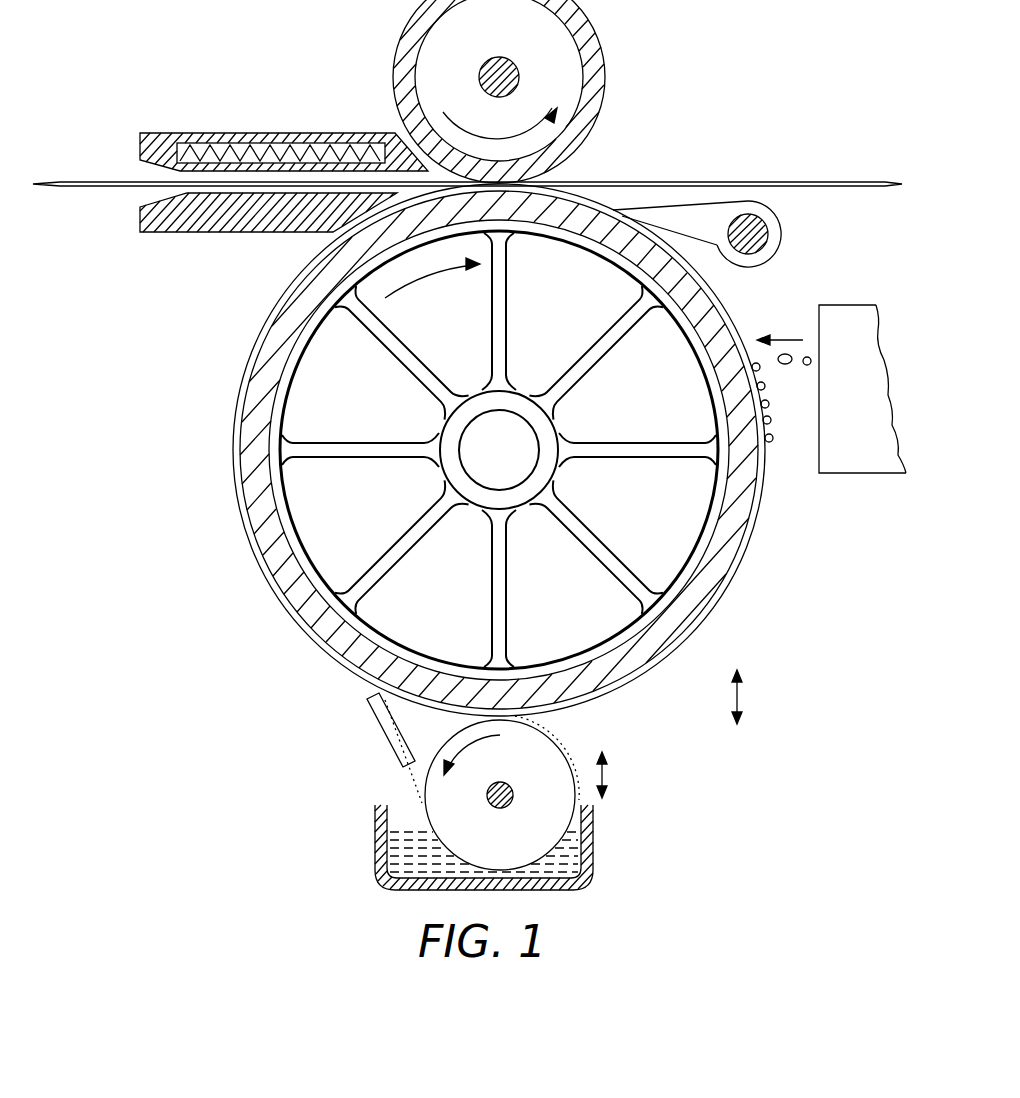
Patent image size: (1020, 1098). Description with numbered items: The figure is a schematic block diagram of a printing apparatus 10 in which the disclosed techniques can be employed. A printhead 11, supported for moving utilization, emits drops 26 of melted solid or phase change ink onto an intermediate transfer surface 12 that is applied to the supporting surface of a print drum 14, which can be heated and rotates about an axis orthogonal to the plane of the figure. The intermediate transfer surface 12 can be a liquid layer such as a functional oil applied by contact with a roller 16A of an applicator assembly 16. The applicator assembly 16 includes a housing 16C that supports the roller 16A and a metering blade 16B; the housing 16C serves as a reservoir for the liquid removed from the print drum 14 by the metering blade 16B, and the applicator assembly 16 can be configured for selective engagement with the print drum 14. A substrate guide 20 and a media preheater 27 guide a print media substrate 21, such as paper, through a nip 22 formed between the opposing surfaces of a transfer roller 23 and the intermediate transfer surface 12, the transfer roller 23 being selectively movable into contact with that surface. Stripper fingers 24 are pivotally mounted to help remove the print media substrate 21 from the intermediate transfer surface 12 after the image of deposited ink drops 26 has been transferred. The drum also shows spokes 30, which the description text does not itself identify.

The printing apparatus 10 is at (712, 43).
The printhead 11 is at (877, 323).
The intermediate transfer surface 12 is at (740, 573).
The print drum 14 is at (703, 618).
The applicator assembly 16 is at (689, 820).
The roller 16A is at (550, 738).
The metering blade 16B is at (376, 718).
The housing 16C is at (375, 845).
The substrate guide 20 is at (226, 232).
The print media substrate 21 is at (836, 182).
The nip 22 is at (580, 170).
The transfer roller 23 is at (393, 78).
The stripper fingers 24 is at (777, 250).
The drops 26 is at (790, 450).
The media preheater 27 is at (226, 133).
The spokes 30 is at (571, 368).